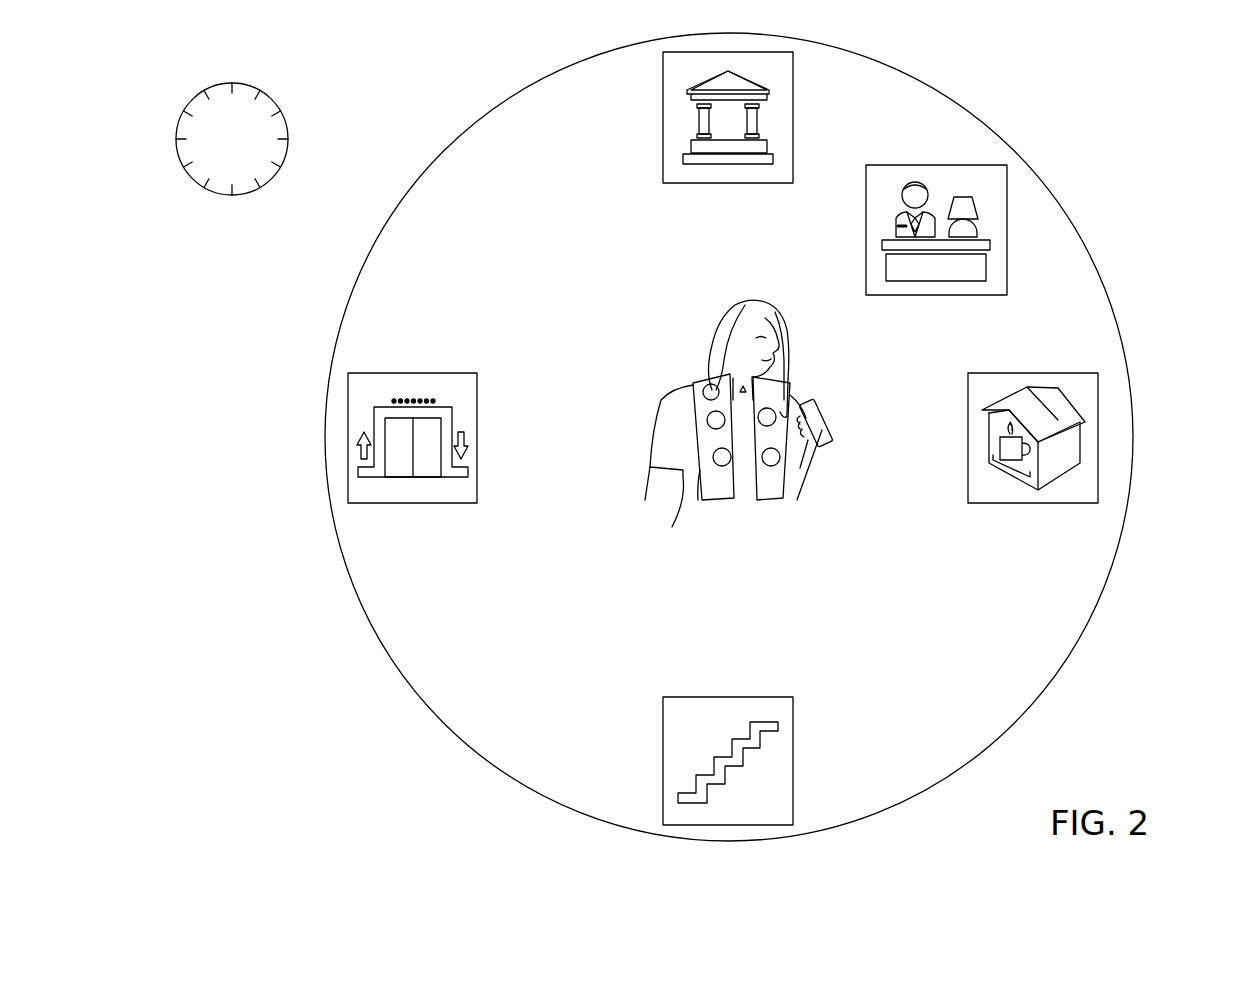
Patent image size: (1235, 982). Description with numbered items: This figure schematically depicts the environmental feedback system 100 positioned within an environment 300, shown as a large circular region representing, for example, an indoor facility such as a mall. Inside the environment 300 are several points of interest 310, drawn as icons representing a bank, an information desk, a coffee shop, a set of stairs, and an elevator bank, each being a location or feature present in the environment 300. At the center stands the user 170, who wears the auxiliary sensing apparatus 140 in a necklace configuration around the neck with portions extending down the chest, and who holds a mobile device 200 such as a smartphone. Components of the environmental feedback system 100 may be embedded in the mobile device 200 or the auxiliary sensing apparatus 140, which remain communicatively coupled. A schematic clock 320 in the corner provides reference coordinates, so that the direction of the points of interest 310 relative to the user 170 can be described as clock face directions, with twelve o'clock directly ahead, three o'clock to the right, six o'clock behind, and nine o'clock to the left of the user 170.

The environmental feedback system 100 is at (1169, 134).
The auxiliary sensing apparatus 140 is at (702, 402).
The user 170 is at (748, 298).
The mobile device 200 is at (822, 402).
The environment 300 is at (384, 651).
The points of interest 310 is at (663, 137).
The schematic clock 320 is at (279, 93).